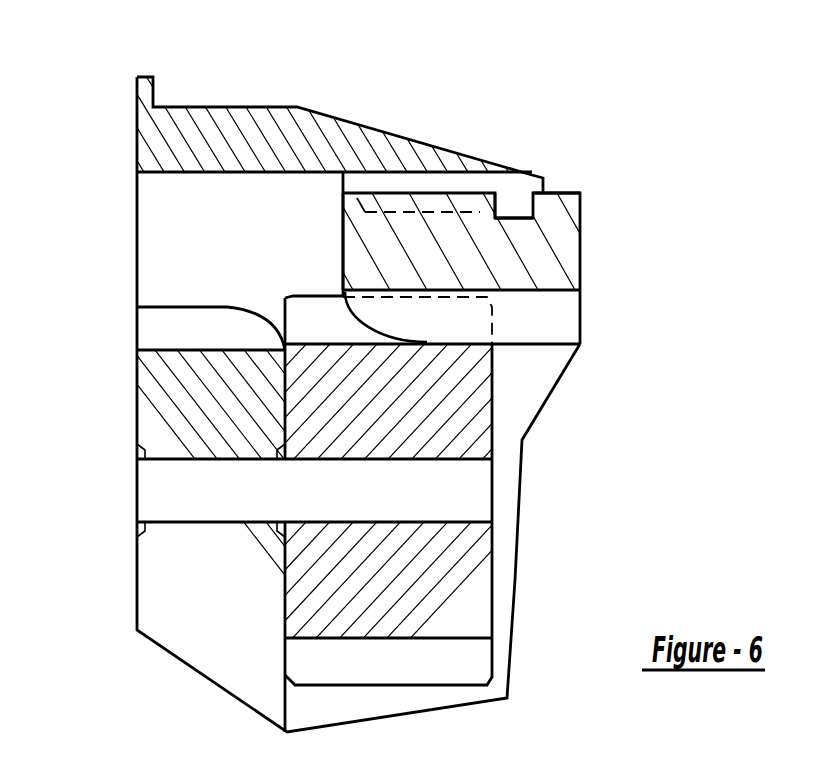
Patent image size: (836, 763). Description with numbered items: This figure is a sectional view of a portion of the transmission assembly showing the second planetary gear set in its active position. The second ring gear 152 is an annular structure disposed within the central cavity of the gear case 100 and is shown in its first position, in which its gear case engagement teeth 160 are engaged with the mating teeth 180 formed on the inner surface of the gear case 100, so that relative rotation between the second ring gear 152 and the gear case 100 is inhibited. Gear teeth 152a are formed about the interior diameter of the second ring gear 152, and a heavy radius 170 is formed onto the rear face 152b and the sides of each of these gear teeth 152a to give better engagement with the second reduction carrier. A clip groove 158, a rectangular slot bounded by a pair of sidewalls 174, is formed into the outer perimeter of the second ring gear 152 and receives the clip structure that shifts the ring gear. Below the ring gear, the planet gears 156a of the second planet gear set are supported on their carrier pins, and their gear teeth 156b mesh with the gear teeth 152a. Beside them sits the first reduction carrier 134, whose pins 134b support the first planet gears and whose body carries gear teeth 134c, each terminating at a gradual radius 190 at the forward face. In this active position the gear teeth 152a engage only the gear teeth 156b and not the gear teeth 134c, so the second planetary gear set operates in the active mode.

The gear case 100 is at (246, 135).
The first reduction carrier 134 is at (180, 410).
The pins 134b is at (233, 490).
The gear teeth 134c is at (198, 322).
The second ring gear 152 is at (552, 258).
The gear teeth 152a is at (553, 320).
The rear face 152b is at (343, 245).
The planet gears 156a is at (418, 582).
The gear teeth 156b is at (305, 320).
The clip groove 158 is at (514, 194).
The gear case engagement teeth 160 is at (490, 203).
The heavy radius 170 is at (383, 330).
The sidewalls 174 is at (537, 205).
The mating teeth 180 is at (350, 190).
The gradual radius 190 is at (285, 350).